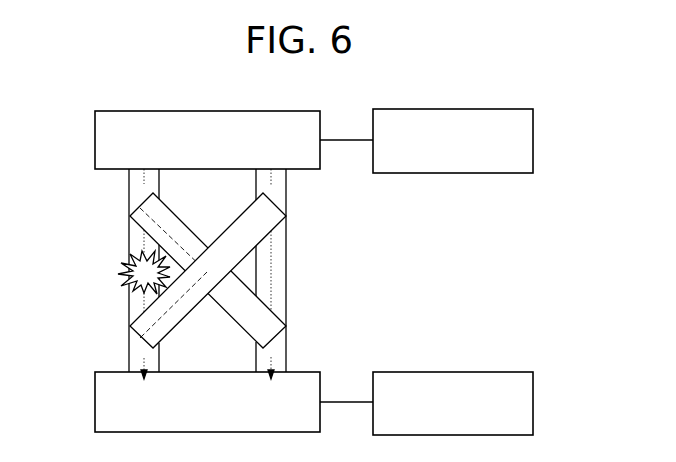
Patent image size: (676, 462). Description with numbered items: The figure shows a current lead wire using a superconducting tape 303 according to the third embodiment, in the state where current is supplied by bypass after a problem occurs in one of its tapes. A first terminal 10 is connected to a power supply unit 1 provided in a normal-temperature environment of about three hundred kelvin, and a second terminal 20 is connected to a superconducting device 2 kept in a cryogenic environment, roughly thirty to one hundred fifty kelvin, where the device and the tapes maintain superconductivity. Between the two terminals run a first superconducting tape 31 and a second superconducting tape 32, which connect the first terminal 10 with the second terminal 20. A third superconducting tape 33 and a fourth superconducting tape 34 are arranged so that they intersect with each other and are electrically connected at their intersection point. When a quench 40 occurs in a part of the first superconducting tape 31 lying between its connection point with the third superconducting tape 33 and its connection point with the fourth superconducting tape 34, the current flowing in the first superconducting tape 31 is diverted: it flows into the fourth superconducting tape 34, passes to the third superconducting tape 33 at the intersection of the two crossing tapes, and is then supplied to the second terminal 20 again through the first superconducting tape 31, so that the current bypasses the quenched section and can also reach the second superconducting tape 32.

The power supply unit 1 is at (533, 109).
The superconducting device 2 is at (533, 372).
The first terminal 10 is at (95, 111).
The second terminal 20 is at (95, 372).
The first superconducting tape 31 is at (136, 191).
The second superconducting tape 32 is at (281, 193).
The third superconducting tape 33 is at (263, 230).
The fourth superconducting tape 34 is at (150, 232).
The quench 40 is at (120, 260).
The current lead wire using a superconducting tape 303 is at (180, 274).